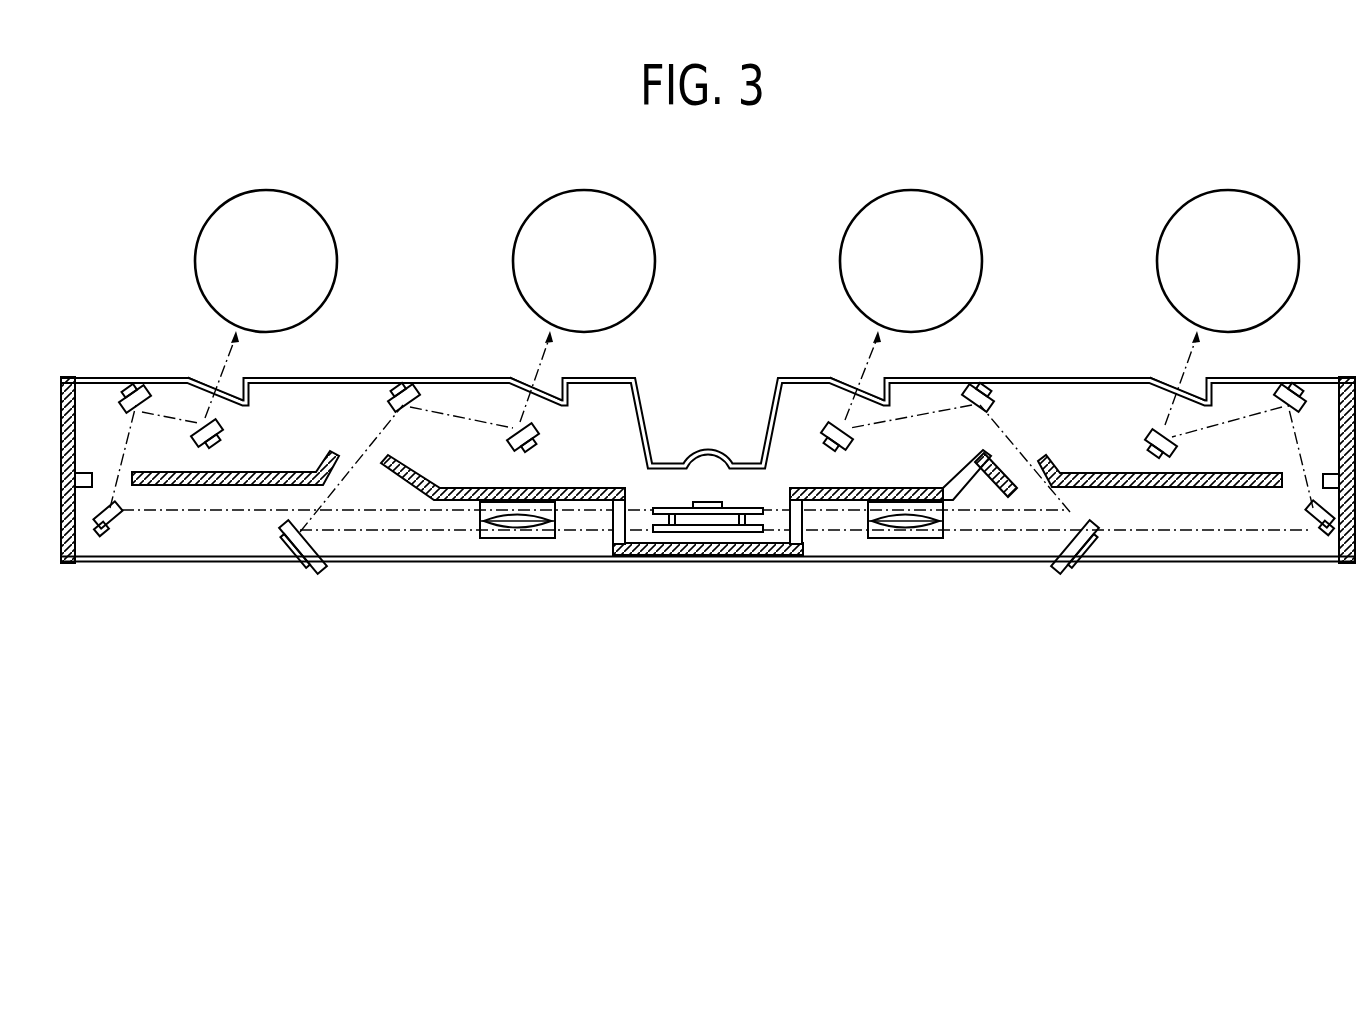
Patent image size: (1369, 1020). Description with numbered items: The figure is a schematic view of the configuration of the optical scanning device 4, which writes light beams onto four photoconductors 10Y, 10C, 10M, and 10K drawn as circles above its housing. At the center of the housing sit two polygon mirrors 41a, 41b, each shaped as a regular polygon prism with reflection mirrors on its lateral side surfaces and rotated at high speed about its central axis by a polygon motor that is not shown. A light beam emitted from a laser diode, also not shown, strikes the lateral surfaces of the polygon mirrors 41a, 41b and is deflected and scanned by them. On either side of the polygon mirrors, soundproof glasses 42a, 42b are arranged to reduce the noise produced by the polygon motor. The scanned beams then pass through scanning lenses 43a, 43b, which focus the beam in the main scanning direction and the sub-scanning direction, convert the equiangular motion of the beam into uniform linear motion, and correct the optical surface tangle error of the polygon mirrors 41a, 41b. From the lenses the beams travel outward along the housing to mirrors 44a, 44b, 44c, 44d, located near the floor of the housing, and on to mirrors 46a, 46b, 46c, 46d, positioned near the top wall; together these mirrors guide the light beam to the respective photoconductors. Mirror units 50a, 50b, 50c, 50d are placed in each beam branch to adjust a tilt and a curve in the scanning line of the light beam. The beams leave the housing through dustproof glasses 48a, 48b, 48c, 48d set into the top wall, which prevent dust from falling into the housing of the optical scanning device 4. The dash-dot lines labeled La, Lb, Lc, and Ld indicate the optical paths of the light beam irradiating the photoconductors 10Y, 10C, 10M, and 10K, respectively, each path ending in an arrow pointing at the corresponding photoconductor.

The optical scanning device 4 is at (699, 627).
The photoconductor 10Y is at (314, 214).
The photoconductor 10C is at (632, 214).
The photoconductor 10M is at (959, 214).
The photoconductor 10K is at (1276, 214).
The polygon mirror 41a is at (713, 533).
The polygon mirror 41b is at (675, 515).
The soundproof glass 42a is at (630, 506).
The soundproof glass 42b is at (786, 507).
The scanning lens 43a is at (514, 540).
The scanning lens 43b is at (905, 540).
The mirror 44a is at (104, 533).
The mirror 44b is at (288, 530).
The mirror 44c is at (1088, 548).
The mirror 44d is at (1320, 532).
The mirror 46a is at (128, 386).
The mirror 46b is at (395, 386).
The mirror 46c is at (990, 386).
The mirror 46d is at (1300, 386).
The dustproof glass 48a is at (194, 378).
The dustproof glass 48b is at (512, 378).
The dustproof glass 48c is at (836, 378).
The dustproof glass 48d is at (1158, 378).
The mirror unit 50a is at (195, 440).
The mirror unit 50b is at (507, 445).
The mirror unit 50c is at (853, 445).
The mirror unit 50d is at (1180, 443).
The optical path La is at (244, 355).
The optical path Lb is at (559, 356).
The optical path Lc is at (881, 356).
The optical path Ld is at (1209, 356).